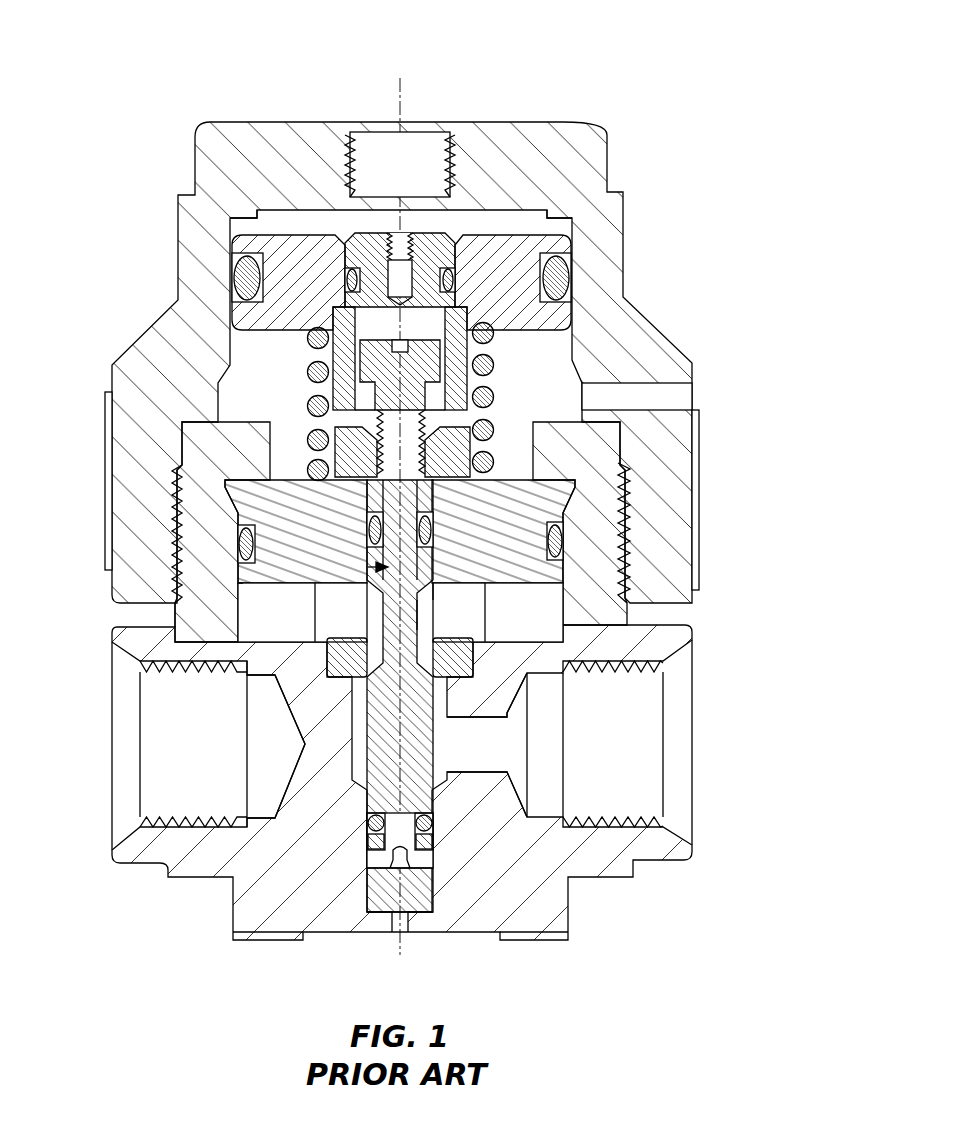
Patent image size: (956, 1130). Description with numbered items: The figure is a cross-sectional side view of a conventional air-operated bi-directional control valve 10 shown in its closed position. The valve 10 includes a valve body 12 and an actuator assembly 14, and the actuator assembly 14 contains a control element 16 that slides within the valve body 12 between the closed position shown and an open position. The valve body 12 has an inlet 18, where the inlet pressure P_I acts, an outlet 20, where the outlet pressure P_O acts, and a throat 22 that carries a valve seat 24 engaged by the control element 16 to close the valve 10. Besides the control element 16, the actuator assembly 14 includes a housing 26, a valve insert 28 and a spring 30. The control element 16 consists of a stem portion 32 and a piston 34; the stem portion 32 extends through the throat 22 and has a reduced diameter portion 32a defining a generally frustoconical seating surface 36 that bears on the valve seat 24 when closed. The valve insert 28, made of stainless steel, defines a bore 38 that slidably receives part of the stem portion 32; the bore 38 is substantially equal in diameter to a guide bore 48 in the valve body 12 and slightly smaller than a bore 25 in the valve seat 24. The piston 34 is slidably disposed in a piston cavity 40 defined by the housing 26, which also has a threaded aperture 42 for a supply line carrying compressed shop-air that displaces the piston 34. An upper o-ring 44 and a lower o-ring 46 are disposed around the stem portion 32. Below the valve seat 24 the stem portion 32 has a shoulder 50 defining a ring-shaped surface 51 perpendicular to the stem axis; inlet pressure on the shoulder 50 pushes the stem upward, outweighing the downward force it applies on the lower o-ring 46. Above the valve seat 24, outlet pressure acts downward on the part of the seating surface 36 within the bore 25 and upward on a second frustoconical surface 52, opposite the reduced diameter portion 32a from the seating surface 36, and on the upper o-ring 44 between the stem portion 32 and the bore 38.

The bi-directional control valve 10 is at (640, 50).
The valve body 12 is at (680, 866).
The actuator assembly 14 is at (665, 320).
The control element 16 is at (232, 578).
The inlet 18 is at (680, 828).
The outlet 20 is at (130, 855).
The throat 22 is at (310, 790).
The valve seat 24 is at (421, 630).
The bore in the valve seat 25 is at (419, 618).
The housing 26 is at (605, 258).
The valve insert 28 is at (595, 436).
The spring 30 is at (305, 355).
The stem portion 32 is at (570, 556).
The reduced diameter portion 32a is at (345, 655).
The piston 34 is at (242, 238).
The seating surface 36 is at (300, 712).
The bore 38 is at (335, 463).
The piston cavity 40 is at (533, 218).
The threaded aperture 42 is at (432, 135).
The upper o-ring 44 is at (236, 520).
The lower o-ring 46 is at (370, 830).
The guide bore 48 is at (374, 887).
The shoulder 50 is at (468, 660).
The ring-shaped surface 51 is at (470, 742).
The second frustoconical surface 52 is at (367, 595).